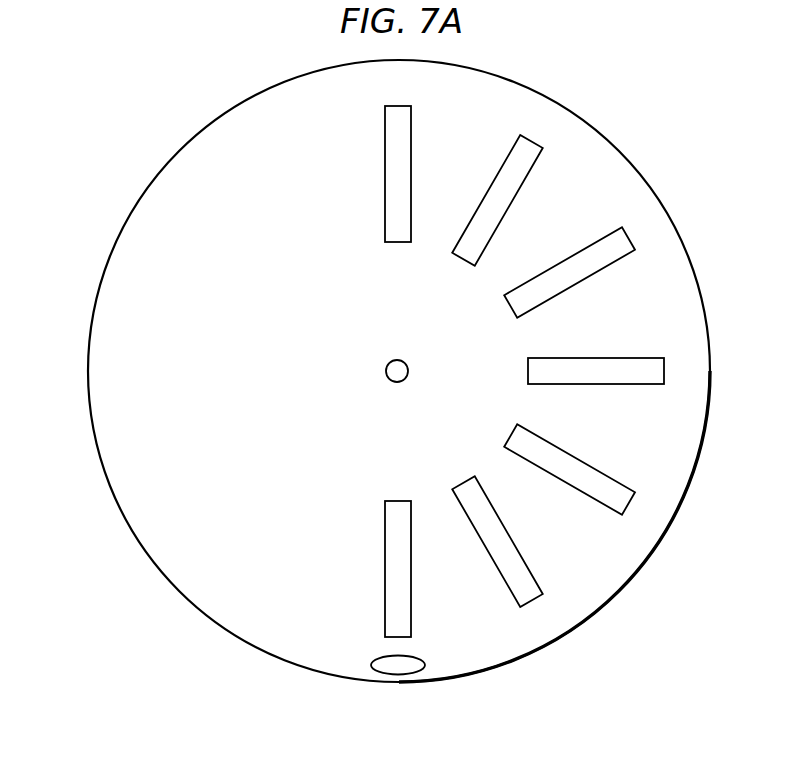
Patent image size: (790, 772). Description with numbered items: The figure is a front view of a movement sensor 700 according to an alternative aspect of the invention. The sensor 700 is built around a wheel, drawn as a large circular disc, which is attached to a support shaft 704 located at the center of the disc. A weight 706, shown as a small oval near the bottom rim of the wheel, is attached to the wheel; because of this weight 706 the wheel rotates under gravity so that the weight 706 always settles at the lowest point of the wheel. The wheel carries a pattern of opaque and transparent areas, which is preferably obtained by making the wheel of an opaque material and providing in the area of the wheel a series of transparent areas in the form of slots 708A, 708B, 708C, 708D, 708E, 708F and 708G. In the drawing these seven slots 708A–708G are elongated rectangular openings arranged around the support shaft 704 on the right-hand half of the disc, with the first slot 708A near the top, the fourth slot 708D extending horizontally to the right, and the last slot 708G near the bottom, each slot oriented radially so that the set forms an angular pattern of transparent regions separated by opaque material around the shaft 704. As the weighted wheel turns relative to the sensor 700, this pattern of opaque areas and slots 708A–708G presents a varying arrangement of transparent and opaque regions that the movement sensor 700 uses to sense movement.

The movement sensor 700 is at (112, 138).
The support shaft 704 is at (388, 361).
The weight 706 is at (378, 673).
The slot 708A is at (411, 175).
The slot 708B is at (498, 218).
The slot 708C is at (588, 277).
The slot 708D is at (565, 384).
The slot 708E is at (545, 472).
The slot 708F is at (488, 555).
The slot 708G is at (385, 574).